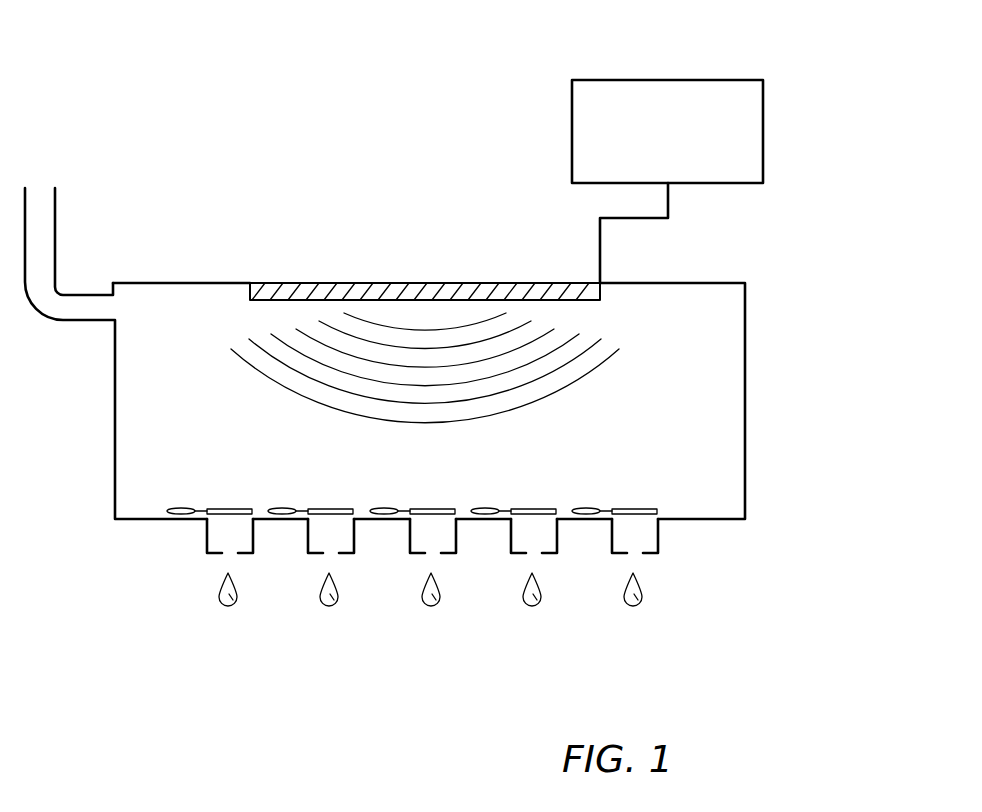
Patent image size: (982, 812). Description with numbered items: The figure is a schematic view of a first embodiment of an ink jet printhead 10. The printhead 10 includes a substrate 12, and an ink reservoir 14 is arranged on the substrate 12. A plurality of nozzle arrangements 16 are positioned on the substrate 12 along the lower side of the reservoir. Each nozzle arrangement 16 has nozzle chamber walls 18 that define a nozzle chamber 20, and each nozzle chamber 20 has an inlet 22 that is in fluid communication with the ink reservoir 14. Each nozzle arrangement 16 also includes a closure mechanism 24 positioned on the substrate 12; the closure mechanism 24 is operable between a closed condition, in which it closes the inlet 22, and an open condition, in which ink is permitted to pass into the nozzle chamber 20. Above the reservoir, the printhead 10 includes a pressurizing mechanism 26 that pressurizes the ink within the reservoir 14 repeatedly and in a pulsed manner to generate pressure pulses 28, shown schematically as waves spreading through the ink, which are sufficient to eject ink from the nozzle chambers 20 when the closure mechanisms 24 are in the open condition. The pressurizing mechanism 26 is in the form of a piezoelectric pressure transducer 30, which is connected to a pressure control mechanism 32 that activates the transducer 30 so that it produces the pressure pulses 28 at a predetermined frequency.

The ink jet printhead 10 is at (300, 168).
The substrate 12 is at (733, 520).
The ink reservoir 14 is at (157, 443).
The nozzle arrangement 16 is at (247, 580).
The nozzle chamber walls 18 is at (203, 530).
The nozzle chamber 20 is at (223, 533).
The inlet 22 is at (242, 522).
The closure mechanism 24 is at (227, 507).
The pressurizing mechanism 26 is at (527, 250).
The pressure pulses 28 is at (498, 403).
The piezoelectric pressure transducer 30 is at (386, 288).
The pressure control mechanism 32 is at (617, 78).